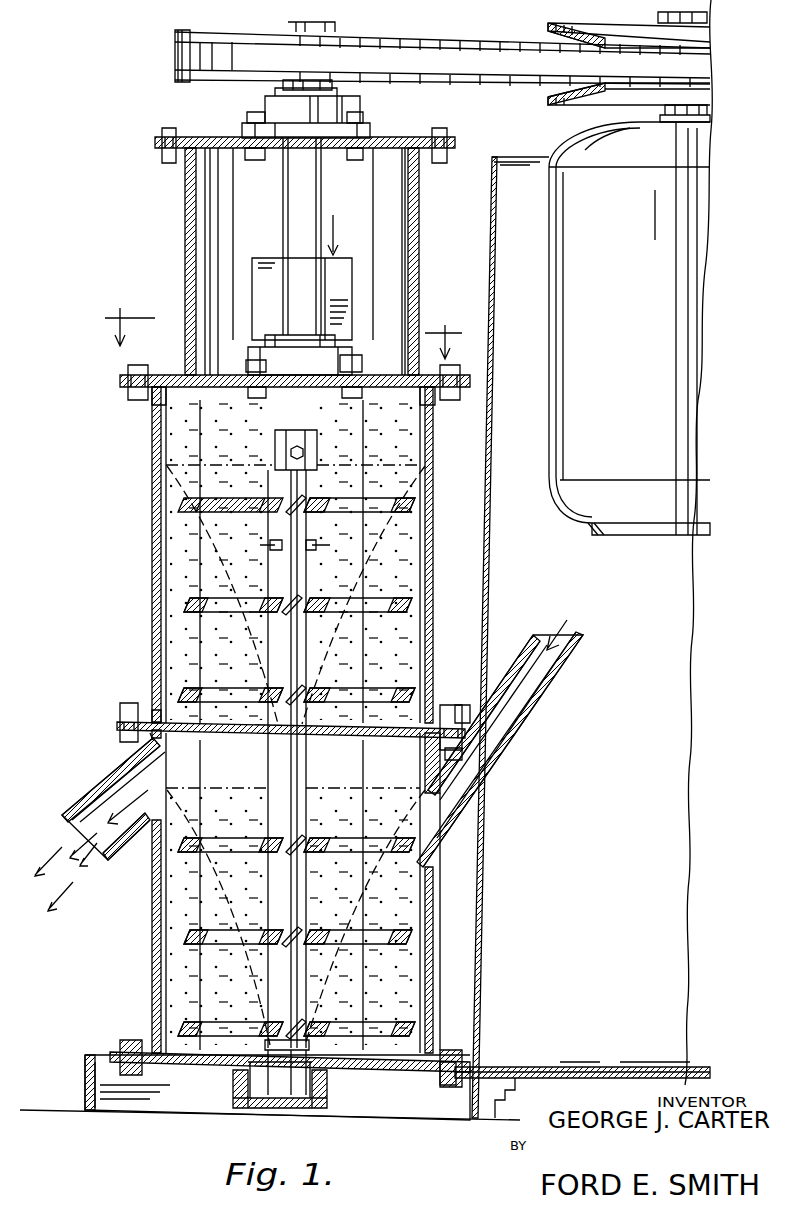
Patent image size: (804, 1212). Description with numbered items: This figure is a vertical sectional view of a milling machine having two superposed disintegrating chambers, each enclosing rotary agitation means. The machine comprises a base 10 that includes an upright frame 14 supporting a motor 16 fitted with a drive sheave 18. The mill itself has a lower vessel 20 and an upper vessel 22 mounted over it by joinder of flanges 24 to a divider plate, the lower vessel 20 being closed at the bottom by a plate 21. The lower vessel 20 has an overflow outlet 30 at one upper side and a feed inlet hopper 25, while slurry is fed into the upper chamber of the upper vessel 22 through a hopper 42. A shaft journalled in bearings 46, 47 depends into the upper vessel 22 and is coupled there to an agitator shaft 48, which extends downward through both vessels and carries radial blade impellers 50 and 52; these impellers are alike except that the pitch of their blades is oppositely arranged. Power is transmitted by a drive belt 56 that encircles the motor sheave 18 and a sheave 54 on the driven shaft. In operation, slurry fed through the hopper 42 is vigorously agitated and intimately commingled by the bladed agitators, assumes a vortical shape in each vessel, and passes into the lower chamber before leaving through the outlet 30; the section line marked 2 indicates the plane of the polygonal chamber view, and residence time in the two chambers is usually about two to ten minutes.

The base 10 is at (542, 1067).
The upright frame 14 is at (665, 692).
The motor 16 is at (646, 284).
The drive sheave 18 is at (556, 98).
The lower vessel 20 is at (437, 927).
The plate 21 is at (381, 1067).
The upper vessel 22 is at (436, 568).
The flanges 24 is at (148, 690).
The feed inlet hopper 25 is at (528, 702).
The overflow outlet 30 is at (103, 770).
The hopper 42 is at (342, 280).
The bearing 46 is at (282, 350).
The bearing 47 is at (283, 108).
The agitator shaft 48 is at (260, 649).
The radial blade impellers 50 is at (248, 503).
The radial blade impellers 52 is at (388, 597).
The sheave 54 is at (176, 31).
The drive belt 56 is at (504, 72).
The section line 2 is at (283, 323).